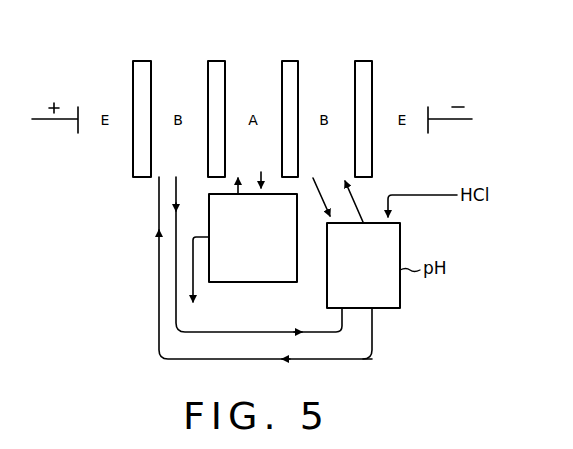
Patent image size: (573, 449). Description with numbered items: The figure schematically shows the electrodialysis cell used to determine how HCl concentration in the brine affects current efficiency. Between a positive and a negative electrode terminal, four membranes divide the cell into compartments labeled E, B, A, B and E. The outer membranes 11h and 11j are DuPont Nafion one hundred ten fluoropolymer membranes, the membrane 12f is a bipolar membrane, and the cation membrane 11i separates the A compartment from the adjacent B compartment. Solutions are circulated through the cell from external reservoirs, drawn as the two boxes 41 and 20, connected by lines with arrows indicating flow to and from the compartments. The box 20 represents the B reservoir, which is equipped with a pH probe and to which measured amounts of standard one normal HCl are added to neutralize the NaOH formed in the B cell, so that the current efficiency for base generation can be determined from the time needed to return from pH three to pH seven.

The membrane 11h is at (140, 61).
The bipolar membrane 12f is at (217, 61).
The cation membrane 11i is at (290, 61).
The membrane 11j is at (366, 61).
The processing unit 41 is at (242, 246).
The pH adjusting vessel 20 is at (343, 275).